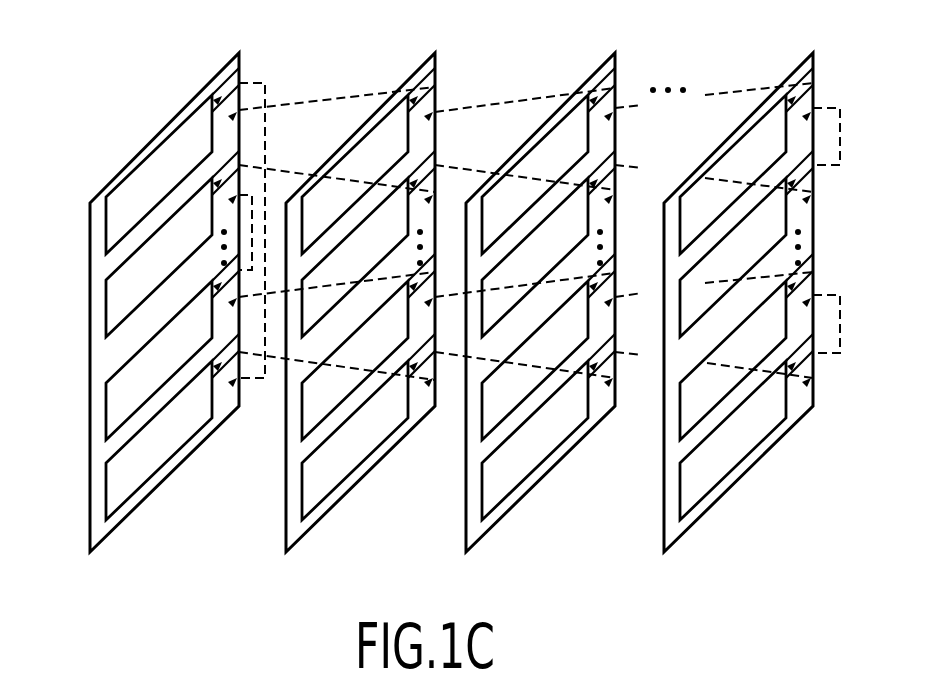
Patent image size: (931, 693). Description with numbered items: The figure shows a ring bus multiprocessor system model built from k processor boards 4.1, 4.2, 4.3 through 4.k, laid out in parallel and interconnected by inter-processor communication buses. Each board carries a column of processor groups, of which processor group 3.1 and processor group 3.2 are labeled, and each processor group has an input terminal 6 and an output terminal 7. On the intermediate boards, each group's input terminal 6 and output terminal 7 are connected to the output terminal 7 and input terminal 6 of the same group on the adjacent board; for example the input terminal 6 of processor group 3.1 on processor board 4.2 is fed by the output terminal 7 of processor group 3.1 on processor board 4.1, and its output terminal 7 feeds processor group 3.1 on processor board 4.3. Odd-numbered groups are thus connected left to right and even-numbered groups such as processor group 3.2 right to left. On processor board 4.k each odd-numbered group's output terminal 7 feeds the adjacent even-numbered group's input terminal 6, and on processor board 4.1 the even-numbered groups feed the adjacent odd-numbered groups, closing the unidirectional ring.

The processor group 3.1 is at (143, 158).
The processor group 3.2 is at (106, 314).
The processor board 4.1 is at (160, 482).
The processor board 4.2 is at (360, 480).
The processor board 4.3 is at (537, 483).
The processor board 4.k is at (717, 497).
The input terminal 6 is at (228, 90).
The output terminal 7 is at (222, 127).